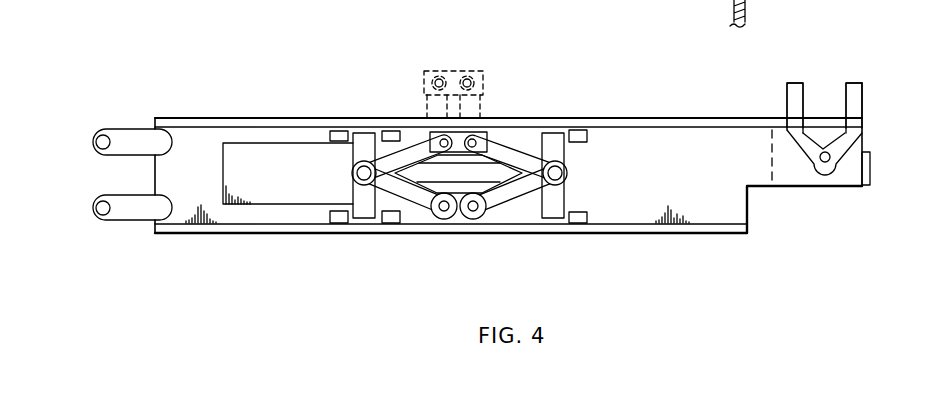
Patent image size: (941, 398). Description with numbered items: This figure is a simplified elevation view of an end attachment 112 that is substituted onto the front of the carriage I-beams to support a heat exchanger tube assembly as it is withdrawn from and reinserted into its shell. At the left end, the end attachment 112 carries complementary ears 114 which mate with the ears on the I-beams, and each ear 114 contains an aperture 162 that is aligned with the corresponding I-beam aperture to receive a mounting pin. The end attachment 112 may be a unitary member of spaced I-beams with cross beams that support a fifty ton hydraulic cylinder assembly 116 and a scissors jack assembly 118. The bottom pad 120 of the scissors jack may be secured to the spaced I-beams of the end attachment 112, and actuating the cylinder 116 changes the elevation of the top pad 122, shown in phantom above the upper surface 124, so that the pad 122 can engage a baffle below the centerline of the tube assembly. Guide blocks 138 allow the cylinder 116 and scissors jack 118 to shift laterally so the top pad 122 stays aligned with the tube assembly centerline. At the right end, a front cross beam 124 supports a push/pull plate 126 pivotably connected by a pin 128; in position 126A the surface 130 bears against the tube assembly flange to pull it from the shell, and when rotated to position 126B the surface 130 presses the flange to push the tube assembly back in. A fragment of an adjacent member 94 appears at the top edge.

The end attachment 112 is at (617, 198).
The ears 114 is at (135, 138).
The hydraulic cylinder assembly 116 is at (300, 167).
The scissors jack assembly 118 is at (498, 198).
The bottom pad 120 is at (425, 218).
The top pad 122 is at (468, 70).
The upper surface / front cross beam 124 is at (240, 117).
The push/pull plate 126 is at (840, 145).
The pull position of push/pull plate 126A is at (857, 93).
The push position of push/pull plate 126B is at (787, 100).
The pin 128 is at (937, 153).
The surface of plate 130 is at (846, 100).
The guide blocks 138 is at (340, 137).
The apertures 162 is at (101, 137).
The member 94 is at (735, 3).